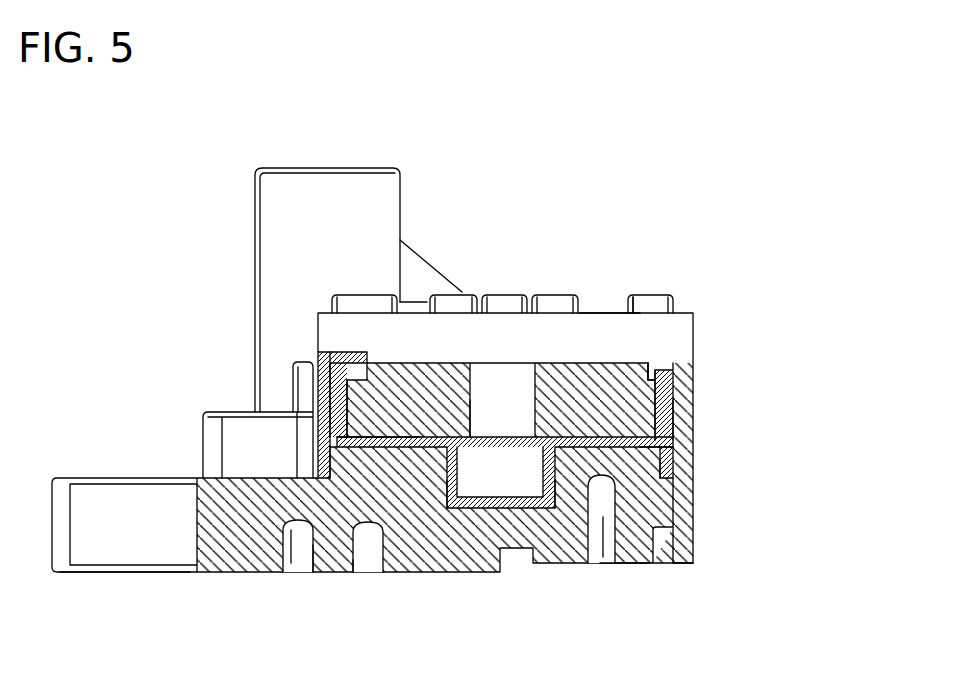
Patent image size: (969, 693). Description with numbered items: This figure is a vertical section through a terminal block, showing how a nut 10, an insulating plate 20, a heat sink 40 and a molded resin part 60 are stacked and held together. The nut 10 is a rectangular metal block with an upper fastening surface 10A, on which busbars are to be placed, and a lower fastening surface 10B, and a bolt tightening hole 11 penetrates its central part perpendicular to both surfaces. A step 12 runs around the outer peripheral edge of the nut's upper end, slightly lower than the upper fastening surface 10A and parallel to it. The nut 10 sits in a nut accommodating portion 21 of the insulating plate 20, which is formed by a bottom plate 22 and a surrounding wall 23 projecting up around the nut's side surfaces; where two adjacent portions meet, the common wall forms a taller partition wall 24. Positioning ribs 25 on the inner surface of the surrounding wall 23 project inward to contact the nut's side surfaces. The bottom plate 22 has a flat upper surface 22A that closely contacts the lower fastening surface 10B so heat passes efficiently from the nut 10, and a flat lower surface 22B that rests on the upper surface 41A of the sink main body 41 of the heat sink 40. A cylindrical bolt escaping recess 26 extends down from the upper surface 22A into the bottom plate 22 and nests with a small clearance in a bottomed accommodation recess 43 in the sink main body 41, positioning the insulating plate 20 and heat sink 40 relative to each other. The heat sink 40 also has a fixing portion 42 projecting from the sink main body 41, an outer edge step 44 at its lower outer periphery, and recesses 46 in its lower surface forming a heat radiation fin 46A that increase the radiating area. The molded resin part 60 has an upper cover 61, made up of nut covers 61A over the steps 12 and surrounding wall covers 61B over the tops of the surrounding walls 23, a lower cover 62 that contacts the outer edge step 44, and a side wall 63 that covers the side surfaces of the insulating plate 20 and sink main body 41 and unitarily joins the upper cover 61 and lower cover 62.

The nut 10 is at (441, 351).
The upper fastening surface 10A is at (597, 362).
The lower fastening surface 10B is at (662, 460).
The bolt tightening hole 11 is at (505, 420).
The step 12 is at (643, 380).
The insulating plate 20 is at (424, 461).
The nut accommodating portion 21 is at (686, 404).
The bottom plate 22 is at (400, 447).
The upper surface of bottom plate 22A is at (392, 437).
The lower surface of bottom plate 22B is at (665, 483).
The surrounding wall 23 is at (673, 422).
The partition wall 24 is at (650, 302).
The positioning rib 25 is at (407, 365).
The bolt escaping recess 26 is at (563, 487).
The heat sink 40 is at (254, 585).
The sink main body 41 is at (646, 574).
The upper surface of sink main body 41A is at (358, 448).
The fixing portion 42 is at (134, 586).
The accommodation recess 43 is at (457, 445).
The outer edge step 44 is at (695, 563).
The recess 46 is at (288, 542).
The heat radiation fin 46A is at (316, 545).
The molded resin part 60 is at (706, 510).
The upper cover 61 is at (273, 265).
The nut cover 61A is at (372, 355).
The surrounding wall cover 61B is at (347, 395).
The lower cover 62 is at (675, 530).
The side wall 63 is at (330, 458).